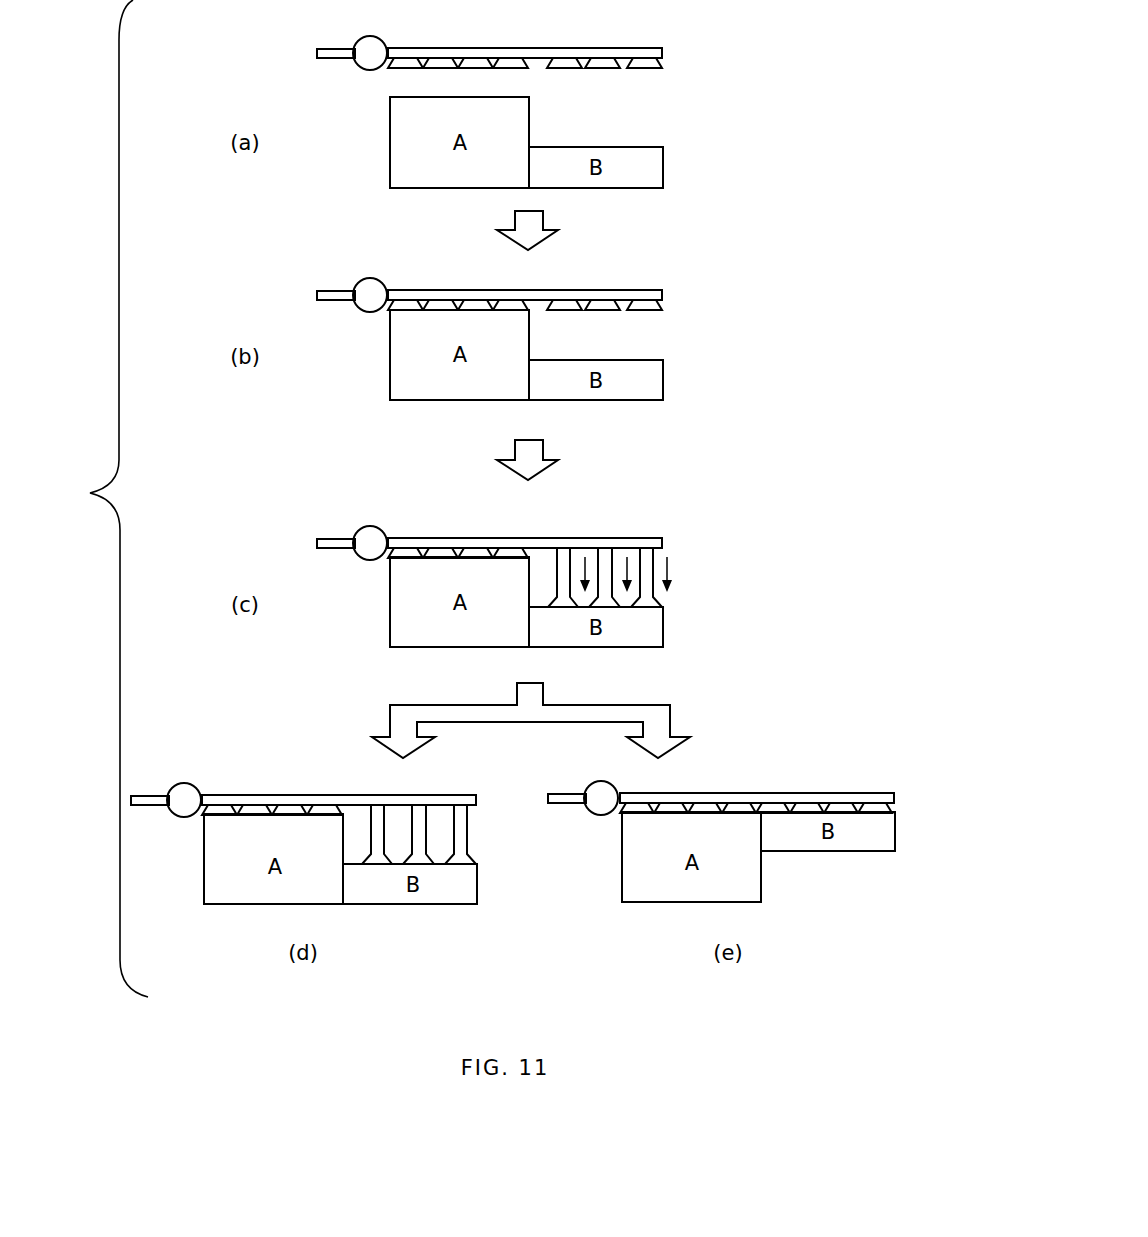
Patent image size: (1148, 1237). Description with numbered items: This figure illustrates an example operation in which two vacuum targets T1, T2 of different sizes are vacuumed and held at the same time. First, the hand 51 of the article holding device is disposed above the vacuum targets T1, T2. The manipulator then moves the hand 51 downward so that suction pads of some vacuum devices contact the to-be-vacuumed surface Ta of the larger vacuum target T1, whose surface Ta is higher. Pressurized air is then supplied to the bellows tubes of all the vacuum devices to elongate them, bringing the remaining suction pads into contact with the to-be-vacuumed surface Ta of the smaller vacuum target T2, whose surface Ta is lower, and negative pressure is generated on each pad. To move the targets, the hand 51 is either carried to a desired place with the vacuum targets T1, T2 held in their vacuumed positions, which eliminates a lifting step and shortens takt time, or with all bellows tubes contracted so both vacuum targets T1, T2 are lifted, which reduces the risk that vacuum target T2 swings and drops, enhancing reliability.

The hand 51 is at (623, 48).
The vacuum target T1 is at (399, 166).
The vacuum target T2 is at (653, 166).
The to-be-vacuumed surface Ta is at (410, 97).